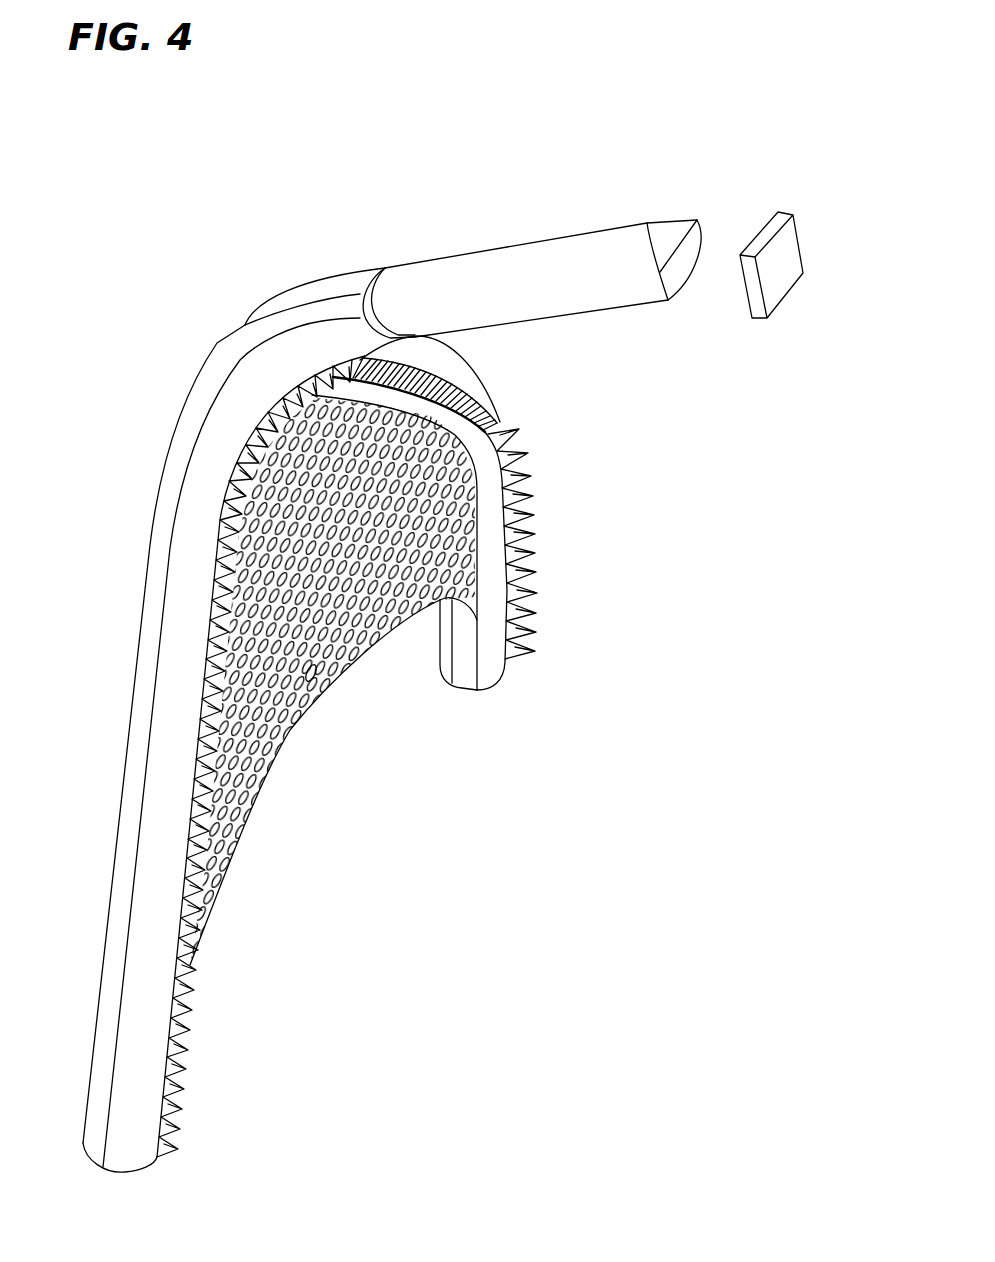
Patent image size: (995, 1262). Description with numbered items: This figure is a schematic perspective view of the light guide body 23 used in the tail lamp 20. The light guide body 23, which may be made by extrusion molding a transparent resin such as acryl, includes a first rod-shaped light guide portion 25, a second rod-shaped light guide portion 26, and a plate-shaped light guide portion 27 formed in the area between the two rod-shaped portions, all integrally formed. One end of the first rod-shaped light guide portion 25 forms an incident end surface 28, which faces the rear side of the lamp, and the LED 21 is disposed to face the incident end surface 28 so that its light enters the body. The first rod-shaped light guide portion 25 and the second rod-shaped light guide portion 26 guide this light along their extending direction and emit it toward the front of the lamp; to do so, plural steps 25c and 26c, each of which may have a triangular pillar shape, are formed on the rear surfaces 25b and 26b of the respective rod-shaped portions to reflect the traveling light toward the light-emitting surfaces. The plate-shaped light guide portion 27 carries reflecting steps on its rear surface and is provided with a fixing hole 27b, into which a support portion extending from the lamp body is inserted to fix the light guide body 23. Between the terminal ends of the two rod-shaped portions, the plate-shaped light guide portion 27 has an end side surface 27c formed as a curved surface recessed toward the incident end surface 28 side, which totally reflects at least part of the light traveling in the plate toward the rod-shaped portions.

The tail lamp 20 is at (248, 262).
The LED 21 is at (787, 257).
The light guide body 23 is at (538, 270).
The first rod-shaped light guide portion 25 is at (488, 551).
The rear surface of first rod-shaped light guide portion 25b is at (500, 670).
The steps 25c is at (530, 498).
The second rod-shaped light guide portion 26 is at (221, 721).
The rear surface of second rod-shaped light guide portion 26b is at (152, 1143).
The steps 26c is at (198, 1022).
The plate-shaped light guide portion 27 is at (267, 681).
The fixing hole 27b is at (305, 677).
The end side surface 27c is at (367, 653).
The incident end surface 28 is at (678, 278).